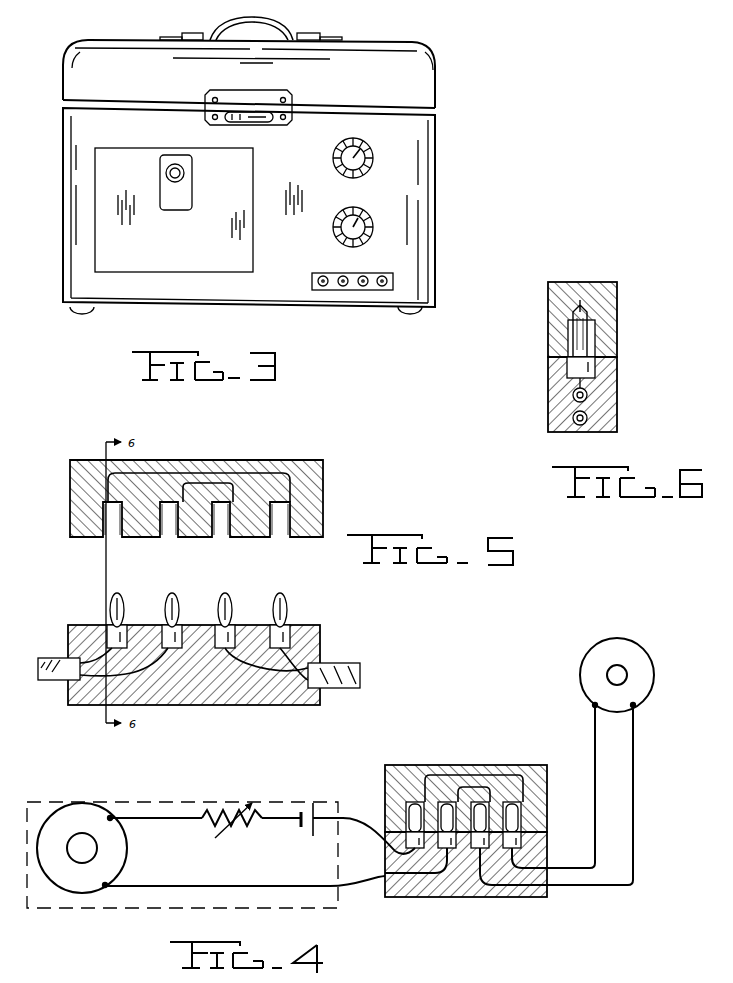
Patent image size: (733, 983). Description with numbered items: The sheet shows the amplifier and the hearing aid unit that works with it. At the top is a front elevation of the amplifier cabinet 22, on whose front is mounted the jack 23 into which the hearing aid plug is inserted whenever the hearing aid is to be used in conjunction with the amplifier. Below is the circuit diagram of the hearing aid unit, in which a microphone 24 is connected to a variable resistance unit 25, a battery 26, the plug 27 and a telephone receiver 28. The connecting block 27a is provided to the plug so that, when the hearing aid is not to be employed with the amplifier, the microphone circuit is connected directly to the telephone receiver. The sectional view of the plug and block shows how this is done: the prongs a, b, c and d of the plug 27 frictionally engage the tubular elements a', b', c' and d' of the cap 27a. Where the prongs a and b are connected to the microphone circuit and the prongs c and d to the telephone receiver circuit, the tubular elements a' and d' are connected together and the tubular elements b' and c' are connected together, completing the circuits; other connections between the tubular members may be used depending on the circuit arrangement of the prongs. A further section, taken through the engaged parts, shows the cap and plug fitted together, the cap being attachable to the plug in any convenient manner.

In FIG. 3, the amplifier cabinet 22 is at (280, 285).
In FIG. 3, the jack 23 is at (357, 293).
In FIG. 4, the microphone 24 is at (95, 883).
In FIG. 4, the variable resistance unit 25 is at (225, 814).
In FIG. 4, the battery 26 is at (313, 806).
In FIG. 5, the plug 27 is at (320, 650).
In FIG. 6, the plug 27 is at (617, 413).
In FIG. 4, the plug 27 is at (527, 897).
In FIG. 5, the connecting block 27a is at (323, 483).
In FIG. 6, the connecting block 27a is at (610, 319).
In FIG. 4, the connecting block 27a is at (533, 765).
In FIG. 4, the telephone receiver 28 is at (628, 638).
In FIG. 5, the prong a is at (120, 598).
In FIG. 5, the prong b is at (175, 596).
In FIG. 5, the prong c is at (227, 598).
In FIG. 5, the prong d is at (283, 598).
In FIG. 5, the tubular element a' is at (155, 468).
In FIG. 5, the tubular element b' is at (197, 468).
In FIG. 5, the tubular element c' is at (238, 468).
In FIG. 5, the tubular element d' is at (279, 468).